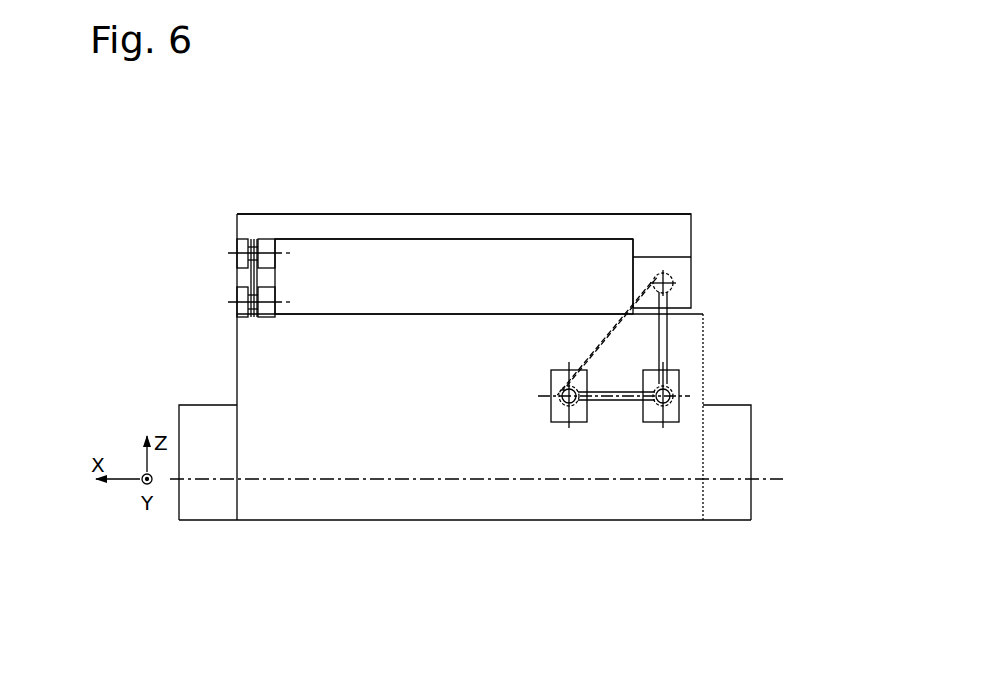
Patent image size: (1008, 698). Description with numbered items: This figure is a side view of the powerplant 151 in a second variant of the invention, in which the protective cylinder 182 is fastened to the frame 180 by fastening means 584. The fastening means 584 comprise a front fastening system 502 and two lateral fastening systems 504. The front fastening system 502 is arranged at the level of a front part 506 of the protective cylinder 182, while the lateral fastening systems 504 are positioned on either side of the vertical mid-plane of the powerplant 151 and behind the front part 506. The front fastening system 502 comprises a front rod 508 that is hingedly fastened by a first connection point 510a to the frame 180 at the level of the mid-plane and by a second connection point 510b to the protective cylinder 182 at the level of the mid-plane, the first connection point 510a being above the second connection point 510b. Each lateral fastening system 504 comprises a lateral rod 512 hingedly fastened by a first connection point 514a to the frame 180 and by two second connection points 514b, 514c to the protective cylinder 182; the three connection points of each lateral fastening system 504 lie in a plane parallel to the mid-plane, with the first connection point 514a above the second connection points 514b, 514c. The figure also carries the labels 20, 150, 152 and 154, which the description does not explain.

The substrate 20 is at (517, 302).
The base 150 is at (735, 572).
The powerplant 151 is at (385, 196).
The right support block 152 is at (771, 534).
The left support block 154 is at (208, 513).
The frame 180 is at (578, 232).
The protective cylinder 182 is at (353, 322).
The front fastening system 502 is at (181, 237).
The lateral fastening system 504 is at (749, 310).
The front part 506 is at (259, 318).
The front rod 508 is at (255, 277).
The first connection point 510a is at (252, 248).
The second connection point 510b is at (252, 298).
The lateral rod 512 is at (598, 357).
The first connection point 514a is at (655, 280).
The second connection point 514b is at (573, 406).
The second connection point 514c is at (668, 396).
The fastening means 584 is at (762, 264).